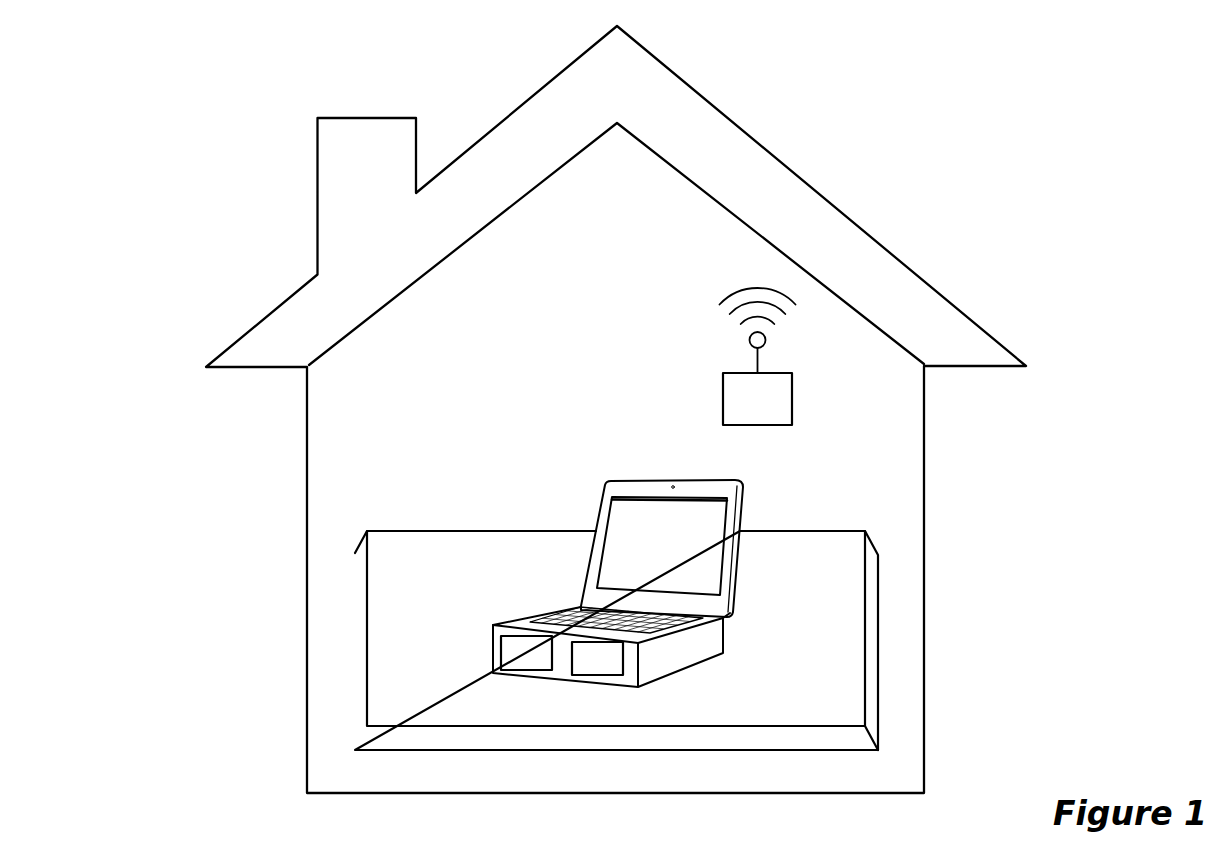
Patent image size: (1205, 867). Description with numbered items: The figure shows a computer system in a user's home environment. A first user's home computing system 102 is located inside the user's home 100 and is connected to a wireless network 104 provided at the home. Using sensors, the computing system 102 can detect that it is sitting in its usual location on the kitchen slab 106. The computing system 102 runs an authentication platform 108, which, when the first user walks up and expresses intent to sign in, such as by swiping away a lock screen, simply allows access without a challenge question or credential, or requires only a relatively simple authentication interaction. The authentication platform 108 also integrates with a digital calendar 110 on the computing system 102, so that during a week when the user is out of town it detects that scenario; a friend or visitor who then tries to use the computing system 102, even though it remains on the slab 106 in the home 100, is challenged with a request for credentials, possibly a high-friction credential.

The home 100 is at (836, 207).
The computing system 102 is at (648, 553).
The wireless network 104 is at (740, 410).
The kitchen slab 106 is at (808, 712).
The authentication platform 108 is at (510, 663).
The digital calendar 110 is at (581, 669).